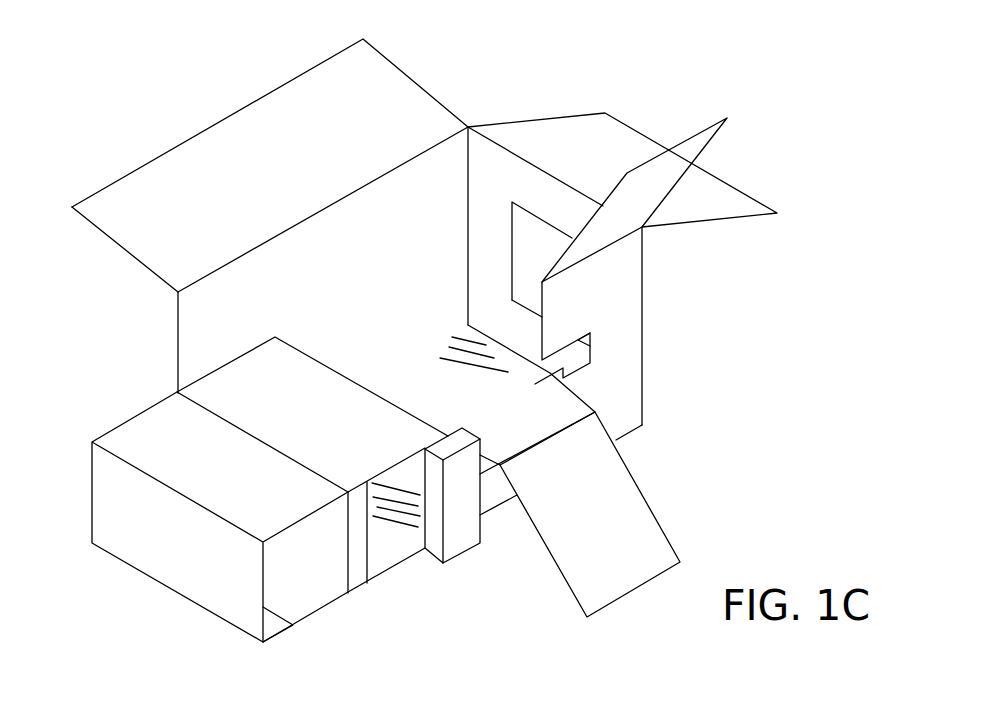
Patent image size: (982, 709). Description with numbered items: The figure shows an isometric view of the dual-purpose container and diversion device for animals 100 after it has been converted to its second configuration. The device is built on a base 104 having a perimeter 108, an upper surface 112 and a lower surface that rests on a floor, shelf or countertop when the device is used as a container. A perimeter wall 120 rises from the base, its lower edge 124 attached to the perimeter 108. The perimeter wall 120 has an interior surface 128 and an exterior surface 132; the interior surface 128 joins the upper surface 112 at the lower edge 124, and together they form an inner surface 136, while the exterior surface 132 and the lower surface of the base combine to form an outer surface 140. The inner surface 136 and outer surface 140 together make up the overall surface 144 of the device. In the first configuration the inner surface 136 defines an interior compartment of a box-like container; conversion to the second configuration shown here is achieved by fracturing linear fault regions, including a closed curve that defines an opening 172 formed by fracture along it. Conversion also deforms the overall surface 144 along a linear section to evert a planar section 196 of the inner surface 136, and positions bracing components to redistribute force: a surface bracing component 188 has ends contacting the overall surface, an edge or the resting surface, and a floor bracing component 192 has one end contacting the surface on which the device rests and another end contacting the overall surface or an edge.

The dual-purpose container and diversion device for animals 100 is at (117, 63).
The base 104 is at (426, 581).
The perimeter 108 is at (258, 541).
The upper surface 112 is at (332, 261).
The perimeter wall 120 is at (122, 342).
The lower edge 124 is at (687, 448).
The interior surface 128 is at (285, 211).
The exterior surface 132 is at (622, 269).
The inner surface 136 is at (270, 149).
The outer surface 140 is at (260, 613).
The overall surface 144 is at (641, 333).
The opening 172 is at (527, 181).
The surface bracing component 188 is at (568, 514).
The floor bracing component 192 is at (514, 557).
The planar section 196 is at (498, 377).